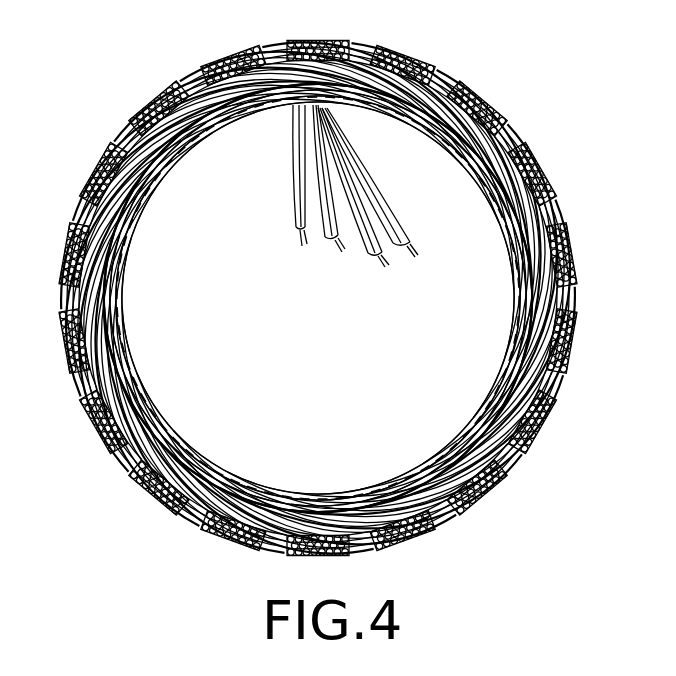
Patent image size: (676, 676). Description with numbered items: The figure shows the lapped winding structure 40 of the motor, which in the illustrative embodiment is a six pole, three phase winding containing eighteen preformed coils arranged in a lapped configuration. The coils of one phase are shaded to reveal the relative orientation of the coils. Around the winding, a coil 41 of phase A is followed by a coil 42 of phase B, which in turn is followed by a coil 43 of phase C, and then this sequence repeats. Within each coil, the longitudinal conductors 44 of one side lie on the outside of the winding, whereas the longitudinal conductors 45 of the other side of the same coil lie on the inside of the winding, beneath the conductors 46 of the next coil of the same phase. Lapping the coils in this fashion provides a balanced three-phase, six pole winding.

The stator winding assembly 40 is at (324, 316).
The coil of phase A 41 is at (347, 40).
The coil of phase B 42 is at (427, 46).
The coil of phase C 43 is at (492, 117).
The longitudinal conductors 44 is at (546, 186).
The longitudinal conductors 45 is at (493, 400).
The conductors of the next coil of the same phase 46 is at (537, 428).